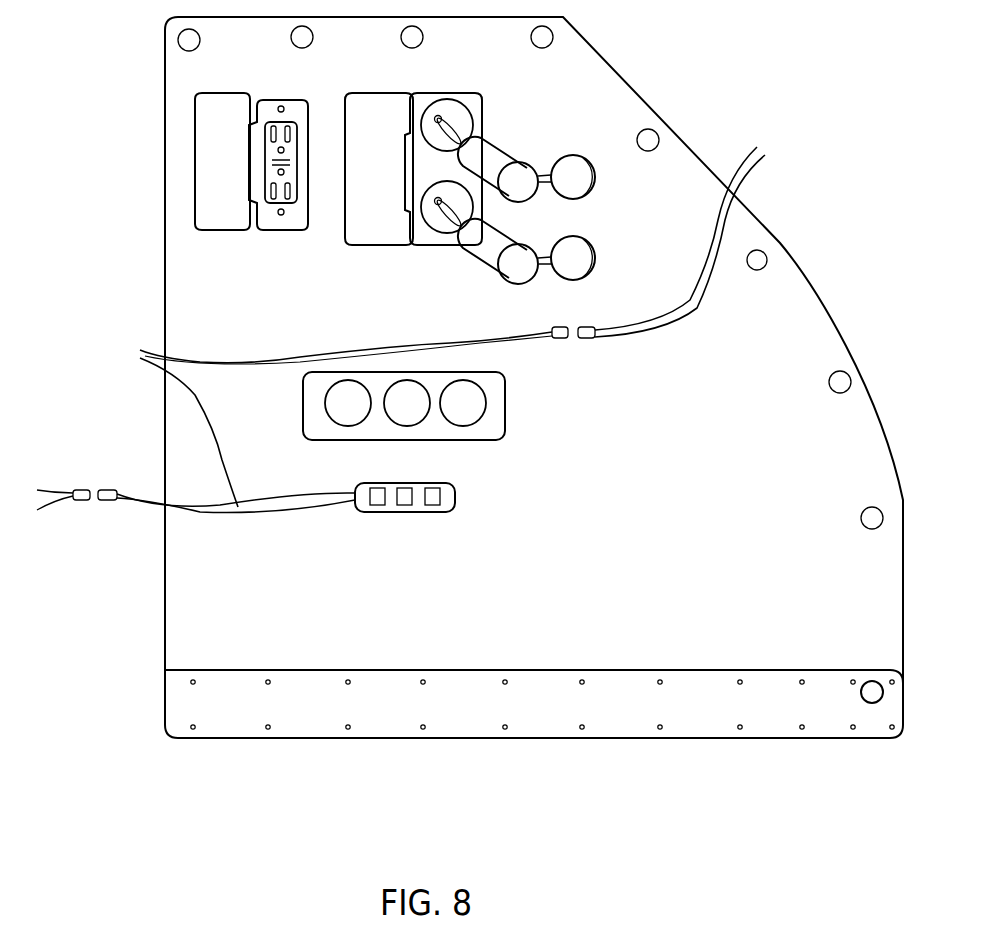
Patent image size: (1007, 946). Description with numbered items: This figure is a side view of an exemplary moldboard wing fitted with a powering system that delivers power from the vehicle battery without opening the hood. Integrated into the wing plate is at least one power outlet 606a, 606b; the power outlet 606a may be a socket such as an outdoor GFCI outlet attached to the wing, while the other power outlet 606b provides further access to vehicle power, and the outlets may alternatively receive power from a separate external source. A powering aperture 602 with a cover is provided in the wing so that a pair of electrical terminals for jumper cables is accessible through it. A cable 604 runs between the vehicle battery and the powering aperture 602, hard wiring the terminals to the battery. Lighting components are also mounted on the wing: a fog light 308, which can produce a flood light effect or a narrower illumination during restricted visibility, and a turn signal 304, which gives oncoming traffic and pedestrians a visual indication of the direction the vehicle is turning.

The powering aperture 602 is at (275, 103).
The cable 604 is at (401, 330).
The power outlet 606a is at (292, 213).
The power outlet 606b is at (538, 198).
The fog light 308 is at (507, 405).
The turn signal 304 is at (407, 513).